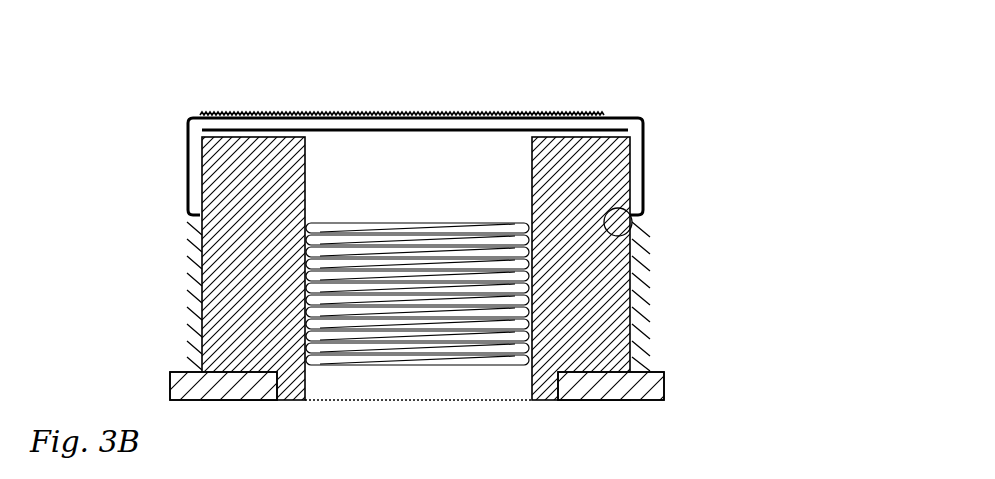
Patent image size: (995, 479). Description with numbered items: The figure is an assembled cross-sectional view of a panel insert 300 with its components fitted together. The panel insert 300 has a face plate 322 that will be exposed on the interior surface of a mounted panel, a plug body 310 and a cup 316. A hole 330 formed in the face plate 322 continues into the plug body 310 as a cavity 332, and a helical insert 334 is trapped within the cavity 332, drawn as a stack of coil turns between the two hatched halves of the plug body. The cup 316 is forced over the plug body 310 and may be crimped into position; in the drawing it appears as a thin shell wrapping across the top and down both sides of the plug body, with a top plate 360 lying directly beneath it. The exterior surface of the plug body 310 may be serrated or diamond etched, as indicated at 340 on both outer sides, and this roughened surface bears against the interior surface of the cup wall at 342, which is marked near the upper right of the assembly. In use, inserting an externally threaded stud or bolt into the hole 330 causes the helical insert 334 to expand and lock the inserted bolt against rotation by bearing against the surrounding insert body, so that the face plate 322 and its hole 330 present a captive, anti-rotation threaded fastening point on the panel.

The panel insert 300 is at (128, 157).
The magnetic core body 310 is at (650, 372).
The cup 316 is at (643, 190).
The face plate 322 is at (605, 403).
The hole 330 is at (325, 413).
The cavity 332 is at (490, 172).
The helical insert 334 is at (502, 366).
The serrated or diamond etched exterior surface 340 is at (150, 290).
The interior surface of the cup wall 342 is at (632, 237).
The top plate 360 is at (597, 132).